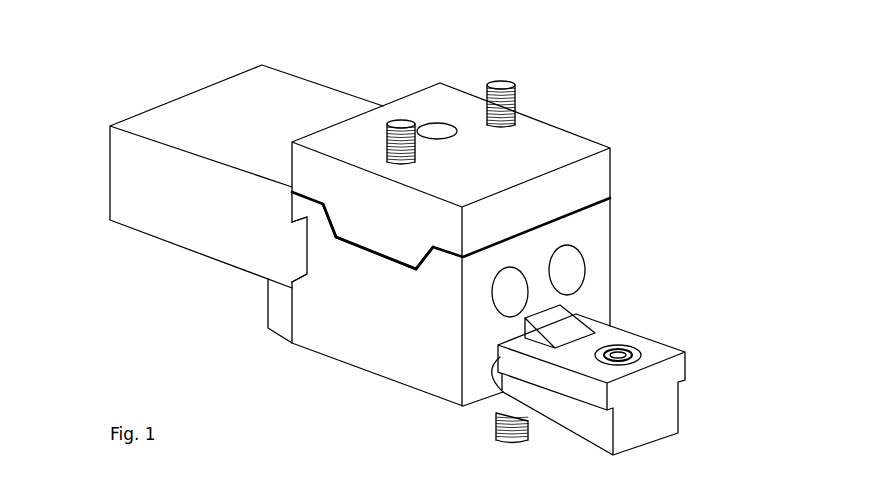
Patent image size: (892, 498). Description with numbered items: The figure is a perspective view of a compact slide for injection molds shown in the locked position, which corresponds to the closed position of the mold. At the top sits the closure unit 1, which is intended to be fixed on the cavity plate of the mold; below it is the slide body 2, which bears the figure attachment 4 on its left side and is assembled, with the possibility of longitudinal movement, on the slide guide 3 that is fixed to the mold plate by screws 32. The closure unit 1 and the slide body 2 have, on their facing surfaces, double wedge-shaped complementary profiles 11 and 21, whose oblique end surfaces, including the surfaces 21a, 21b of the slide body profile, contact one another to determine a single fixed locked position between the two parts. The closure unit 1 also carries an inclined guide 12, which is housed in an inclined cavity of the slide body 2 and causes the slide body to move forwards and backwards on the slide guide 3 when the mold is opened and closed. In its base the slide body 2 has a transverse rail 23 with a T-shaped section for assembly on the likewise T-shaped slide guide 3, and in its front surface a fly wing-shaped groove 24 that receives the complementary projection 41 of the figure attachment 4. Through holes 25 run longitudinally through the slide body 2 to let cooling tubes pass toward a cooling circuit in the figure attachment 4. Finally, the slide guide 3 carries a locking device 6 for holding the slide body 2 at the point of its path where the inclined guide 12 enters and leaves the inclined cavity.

The closure unit 1 is at (587, 186).
The slide body 2 is at (590, 235).
The slide guide 3 is at (648, 428).
The figure attachment 4 is at (151, 193).
The locking device 6 is at (582, 328).
The double wedge-shaped complementary profile 11 is at (367, 243).
The inclined guide 12 is at (442, 133).
The double wedge-shaped complementary profile 21 is at (383, 257).
The oblique end surface 21a is at (424, 264).
The oblique end surface 21b is at (324, 238).
The transverse rail 23 is at (508, 395).
The fly wing-shaped groove 24 is at (307, 274).
The through holes 25 is at (585, 276).
The screws 32 is at (640, 352).
The projection 41 is at (302, 248).